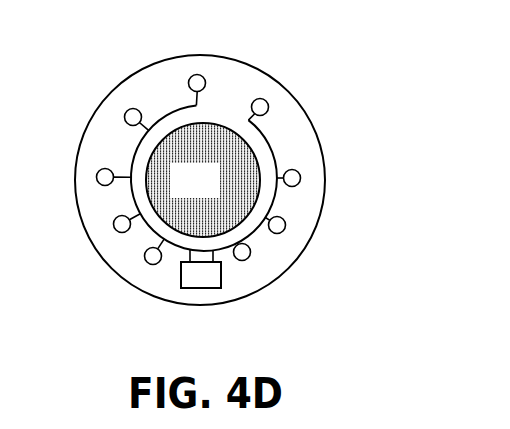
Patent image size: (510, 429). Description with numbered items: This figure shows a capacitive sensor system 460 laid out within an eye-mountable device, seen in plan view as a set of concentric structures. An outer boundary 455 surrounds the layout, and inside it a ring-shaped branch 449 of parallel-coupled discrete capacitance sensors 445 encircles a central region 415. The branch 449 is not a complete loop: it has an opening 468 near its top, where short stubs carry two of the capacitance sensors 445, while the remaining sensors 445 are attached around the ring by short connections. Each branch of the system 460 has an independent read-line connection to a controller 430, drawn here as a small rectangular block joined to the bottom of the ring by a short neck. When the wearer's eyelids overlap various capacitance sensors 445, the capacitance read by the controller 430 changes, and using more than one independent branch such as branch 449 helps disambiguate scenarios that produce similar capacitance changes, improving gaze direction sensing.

The sensor element 415 is at (216, 191).
The controller 430 is at (181, 272).
The discrete capacitance sensors 445 is at (204, 77).
The branch 449 is at (132, 158).
The outer housing 455 is at (127, 82).
The capacitive sensor system 460 is at (228, 175).
The ring opening 468 is at (270, 147).